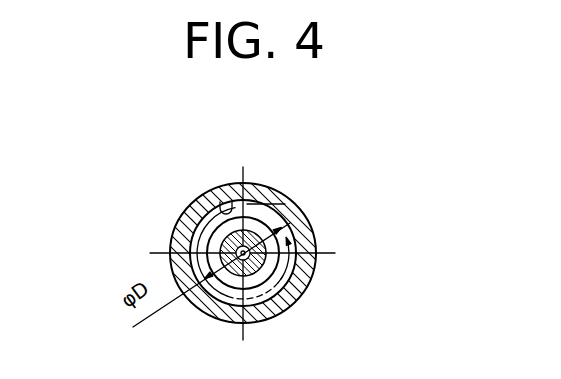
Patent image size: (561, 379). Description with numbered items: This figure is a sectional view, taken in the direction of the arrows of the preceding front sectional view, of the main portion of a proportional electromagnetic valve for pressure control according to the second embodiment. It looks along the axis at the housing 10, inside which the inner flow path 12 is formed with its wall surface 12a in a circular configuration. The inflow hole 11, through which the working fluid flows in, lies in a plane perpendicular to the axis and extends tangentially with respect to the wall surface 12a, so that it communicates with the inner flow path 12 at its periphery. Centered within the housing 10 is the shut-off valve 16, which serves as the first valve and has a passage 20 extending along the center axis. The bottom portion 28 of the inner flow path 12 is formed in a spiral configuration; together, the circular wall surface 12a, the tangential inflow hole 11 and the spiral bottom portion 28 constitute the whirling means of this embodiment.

The housing 10 is at (313, 238).
The inflow hole 11 is at (285, 204).
The inner flow path 12 is at (190, 200).
The wall surface 12a is at (221, 201).
The shut-off valve 16 is at (273, 281).
The passage 20 is at (287, 307).
The bottom portion 28 is at (270, 213).